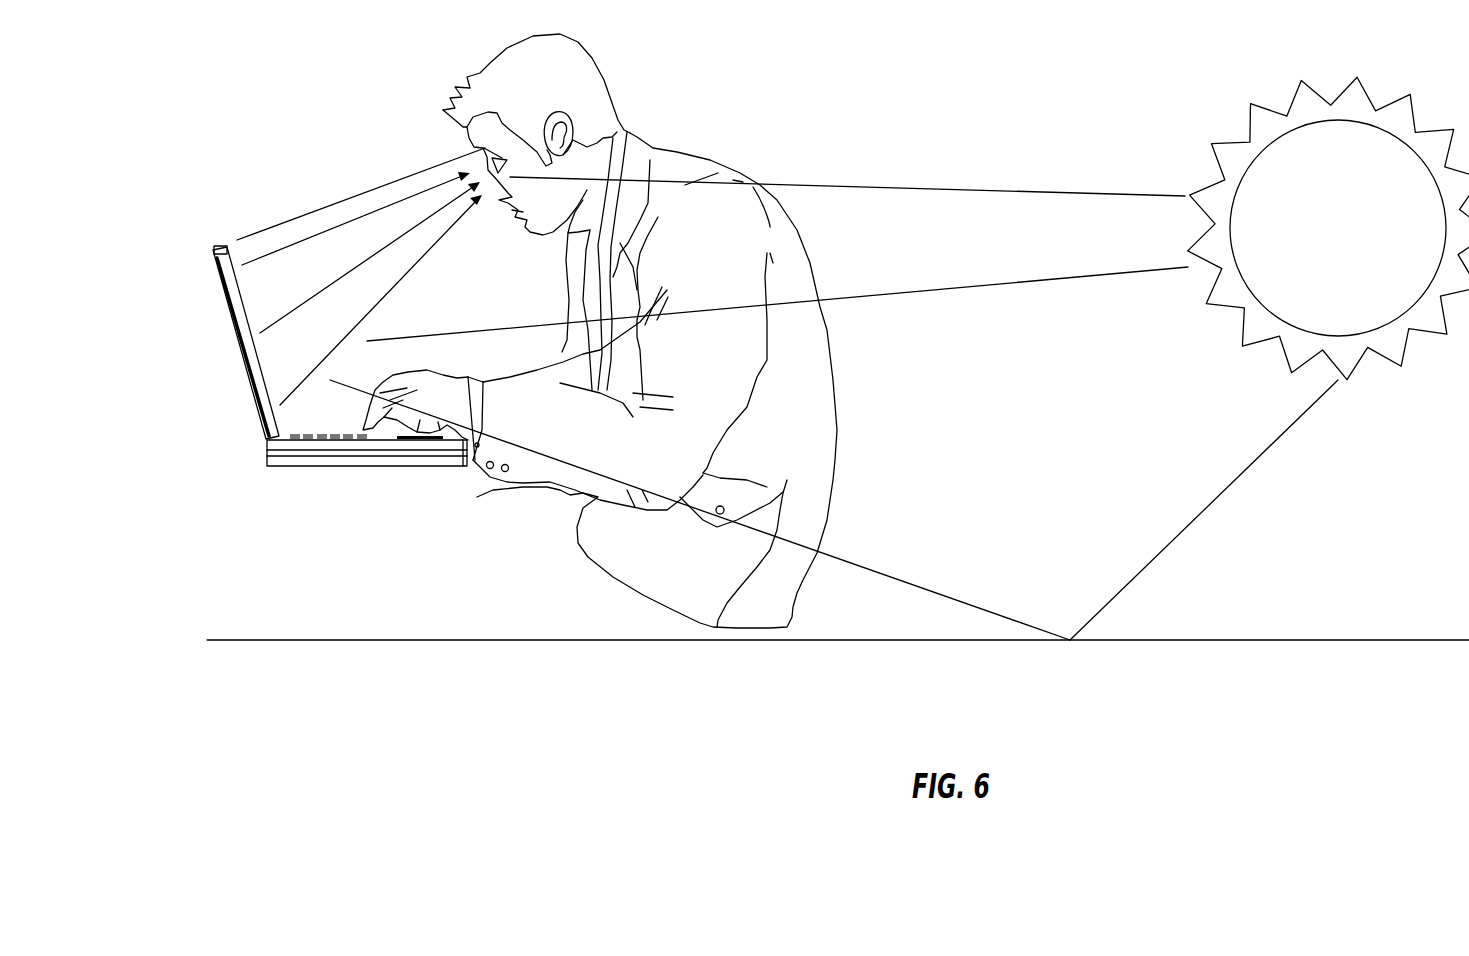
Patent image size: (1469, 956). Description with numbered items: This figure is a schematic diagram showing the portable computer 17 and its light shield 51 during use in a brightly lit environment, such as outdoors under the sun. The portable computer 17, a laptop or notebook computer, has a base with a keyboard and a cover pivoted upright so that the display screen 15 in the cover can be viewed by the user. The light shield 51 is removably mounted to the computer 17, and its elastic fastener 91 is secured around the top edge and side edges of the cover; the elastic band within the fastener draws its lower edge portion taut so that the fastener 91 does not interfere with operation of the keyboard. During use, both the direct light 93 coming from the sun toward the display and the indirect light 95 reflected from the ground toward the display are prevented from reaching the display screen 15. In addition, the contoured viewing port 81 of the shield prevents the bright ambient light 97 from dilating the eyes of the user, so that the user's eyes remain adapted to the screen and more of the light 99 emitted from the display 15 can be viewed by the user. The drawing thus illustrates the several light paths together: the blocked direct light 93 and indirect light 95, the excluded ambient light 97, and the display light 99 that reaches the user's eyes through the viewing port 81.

The display screen 15 is at (243, 303).
The portable computer 17 is at (310, 476).
The light shield 51 is at (388, 185).
The contoured viewing port 81 is at (486, 148).
The elastic fastener 91 is at (237, 240).
The direct light 93 is at (1055, 277).
The indirect light 95 is at (955, 597).
The bright ambient light 97 is at (1020, 190).
The light from display 99 is at (440, 238).